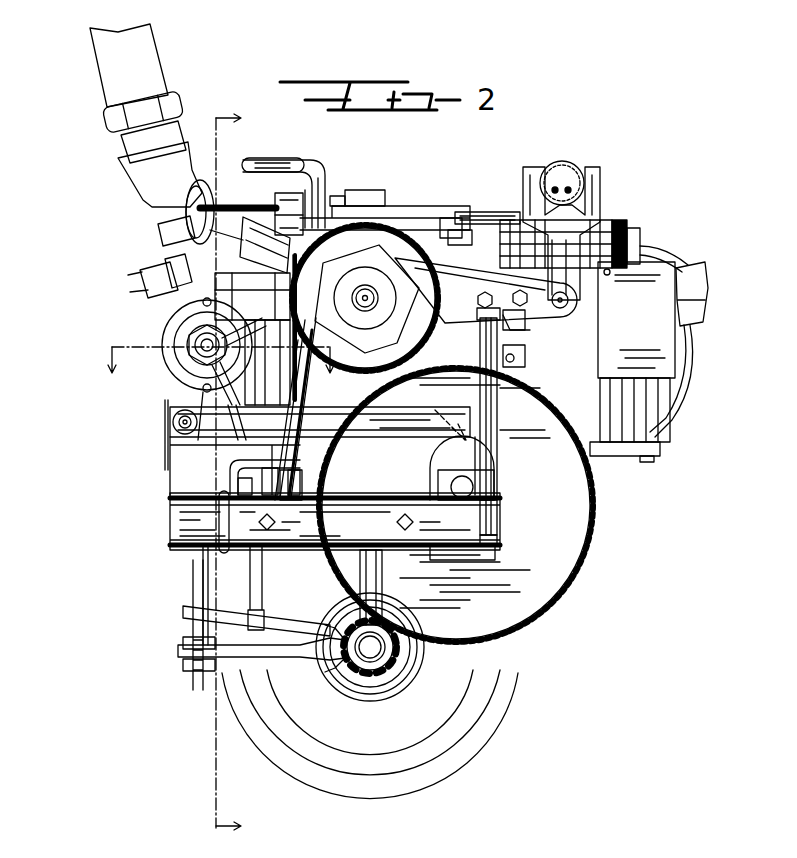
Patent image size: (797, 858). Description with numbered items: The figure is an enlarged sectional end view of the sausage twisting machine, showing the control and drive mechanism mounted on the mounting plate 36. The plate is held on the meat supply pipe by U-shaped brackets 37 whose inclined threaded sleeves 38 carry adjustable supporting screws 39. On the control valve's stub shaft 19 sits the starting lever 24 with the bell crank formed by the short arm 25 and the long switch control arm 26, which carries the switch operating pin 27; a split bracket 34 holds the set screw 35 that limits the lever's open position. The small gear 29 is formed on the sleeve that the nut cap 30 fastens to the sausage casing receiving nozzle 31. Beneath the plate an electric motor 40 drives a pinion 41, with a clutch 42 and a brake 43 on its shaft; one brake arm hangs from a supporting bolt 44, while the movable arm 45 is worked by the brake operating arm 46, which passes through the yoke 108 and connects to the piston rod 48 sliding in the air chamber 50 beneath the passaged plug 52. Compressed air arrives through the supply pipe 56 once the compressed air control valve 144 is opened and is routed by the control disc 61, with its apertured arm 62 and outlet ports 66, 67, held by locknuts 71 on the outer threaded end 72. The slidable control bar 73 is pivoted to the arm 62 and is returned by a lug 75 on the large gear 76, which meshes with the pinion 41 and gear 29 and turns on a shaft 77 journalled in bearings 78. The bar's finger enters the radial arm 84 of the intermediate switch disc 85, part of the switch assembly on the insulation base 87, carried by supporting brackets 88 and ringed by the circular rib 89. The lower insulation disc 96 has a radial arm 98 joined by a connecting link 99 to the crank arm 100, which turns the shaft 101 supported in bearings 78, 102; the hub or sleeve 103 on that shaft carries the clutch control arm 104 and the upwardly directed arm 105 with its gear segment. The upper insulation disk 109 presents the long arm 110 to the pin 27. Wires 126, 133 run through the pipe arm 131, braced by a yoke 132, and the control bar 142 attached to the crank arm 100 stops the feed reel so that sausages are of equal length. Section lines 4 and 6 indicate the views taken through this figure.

The section line 4- 4 is at (212, 373).
The section line 6- 6 is at (228, 472).
The stub shaft 19 is at (368, 190).
The starting lever 24 is at (302, 165).
The short bell crank arm 25 is at (338, 196).
The long switch control arm 26 is at (445, 218).
The switch operating pin 27 is at (458, 232).
The small gear 29 is at (372, 225).
The nut cap 30 is at (367, 299).
The sausage casing receiving nozzle 31 is at (352, 300).
The split bracket 34 is at (282, 162).
The set screw 35 is at (276, 192).
The mounting plate 36 is at (640, 458).
The U-shaped brackets 37 is at (165, 242).
The internally threaded sleeves 38 is at (238, 193).
The adjustable supporting screws 39 is at (186, 232).
The electric motor 40 is at (468, 760).
The pinion 41 is at (372, 668).
The clutch 42 is at (342, 742).
The brake 43 is at (300, 655).
The supporting bolt 44 is at (195, 585).
The movable arm 45 is at (180, 612).
The brake operating arm 46 is at (250, 462).
The piston rod 48 is at (235, 258).
The chamber 50 is at (300, 362).
The passaged plug 52 is at (252, 296).
The compressed air supply pipe 56 is at (150, 75).
The control disc 61 is at (190, 360).
The apertured arm 62 is at (180, 400).
The air outlet port 66 is at (222, 412).
The air outlet port 67 is at (252, 330).
The locknuts 71 is at (192, 312).
The outer threaded end 72 is at (237, 385).
The slidable control bar 73 is at (195, 440).
The lug 75 is at (436, 417).
The large gear 76 is at (566, 575).
The shaft 77 is at (458, 482).
The bearings 78 is at (460, 548).
The radial arm 84 is at (585, 240).
The intermediate control switch disc 85 is at (636, 236).
The insulation base 87 is at (636, 352).
The supporting brackets 88 is at (630, 400).
The circular rib 89 is at (690, 270).
The insulation disc 96 is at (648, 250).
The radial arm 98 is at (460, 268).
The connecting link 99 is at (507, 205).
The crank arm 100 is at (497, 465).
The shaft 101 is at (498, 512).
The bearing 102 is at (170, 524).
The hub or sleeve 103 is at (355, 524).
The clutch control arm 104 is at (382, 595).
The upwardly directed arm 105 is at (280, 482).
The yoke 108 is at (295, 493).
The upper insulation disk 109 is at (625, 232).
The long arm 110 is at (462, 214).
The wire 126 is at (568, 178).
The pipe arm 131 is at (584, 170).
The yoke 132 is at (590, 185).
The wire 133 is at (556, 186).
The control bar 142 is at (525, 362).
The compressed air control valve 144 is at (128, 281).